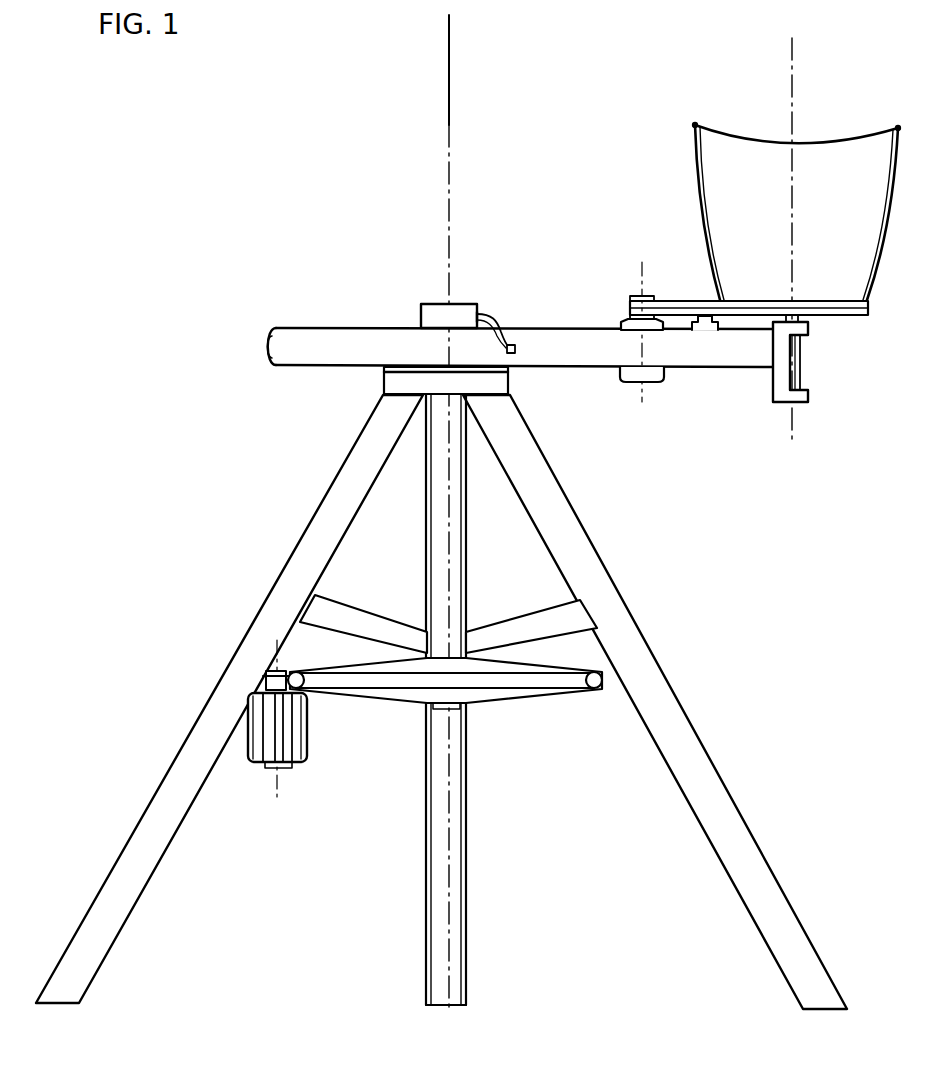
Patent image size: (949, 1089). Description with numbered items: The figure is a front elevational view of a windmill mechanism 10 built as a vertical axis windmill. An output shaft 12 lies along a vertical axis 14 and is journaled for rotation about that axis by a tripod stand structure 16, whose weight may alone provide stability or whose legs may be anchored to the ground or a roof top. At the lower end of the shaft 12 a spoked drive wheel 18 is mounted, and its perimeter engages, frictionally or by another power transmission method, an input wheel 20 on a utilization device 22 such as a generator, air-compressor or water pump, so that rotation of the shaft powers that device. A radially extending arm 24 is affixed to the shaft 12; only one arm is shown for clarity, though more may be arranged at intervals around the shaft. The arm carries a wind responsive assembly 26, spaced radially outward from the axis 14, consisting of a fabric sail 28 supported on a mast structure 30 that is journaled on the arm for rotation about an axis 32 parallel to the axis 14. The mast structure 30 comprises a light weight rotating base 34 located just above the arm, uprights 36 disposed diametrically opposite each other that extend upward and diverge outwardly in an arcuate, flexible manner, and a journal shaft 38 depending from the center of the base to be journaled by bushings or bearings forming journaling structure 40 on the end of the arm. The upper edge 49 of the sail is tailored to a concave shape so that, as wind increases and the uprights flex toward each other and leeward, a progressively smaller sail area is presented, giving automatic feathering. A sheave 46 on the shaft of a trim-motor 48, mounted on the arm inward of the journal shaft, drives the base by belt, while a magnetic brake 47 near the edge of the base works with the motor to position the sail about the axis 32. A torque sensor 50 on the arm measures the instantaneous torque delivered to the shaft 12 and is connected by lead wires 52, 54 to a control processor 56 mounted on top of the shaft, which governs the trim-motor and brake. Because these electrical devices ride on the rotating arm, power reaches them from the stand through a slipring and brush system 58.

The windmill mechanism 10 is at (252, 258).
The output shaft 12 is at (455, 562).
The vertical axis 14 is at (450, 112).
The tripod stand structure 16 is at (650, 686).
The spoked drive wheel 18 is at (592, 692).
The input wheel 20 is at (268, 672).
The utilization device 22 is at (282, 724).
The radially extending arm 24 is at (580, 344).
The wind responsive assembly 26 is at (778, 270).
The fabric sail 28 is at (758, 208).
The mast structure 30 is at (702, 222).
The axis 32 is at (794, 80).
The rotating base 34 is at (850, 318).
The uprights 36 is at (697, 183).
The journal shaft 38 is at (800, 372).
The journaling structure 40 is at (800, 328).
The sheave 46 is at (636, 300).
The magnetic brake 47 is at (708, 330).
The trim-motor 48 is at (652, 384).
The upper edge 49 is at (782, 142).
The torque sensor 50 is at (515, 353).
The lead wire 52 is at (489, 316).
The lead wire 54 is at (480, 310).
The control processor 56 is at (438, 315).
The slipring and brush system 58 is at (400, 373).